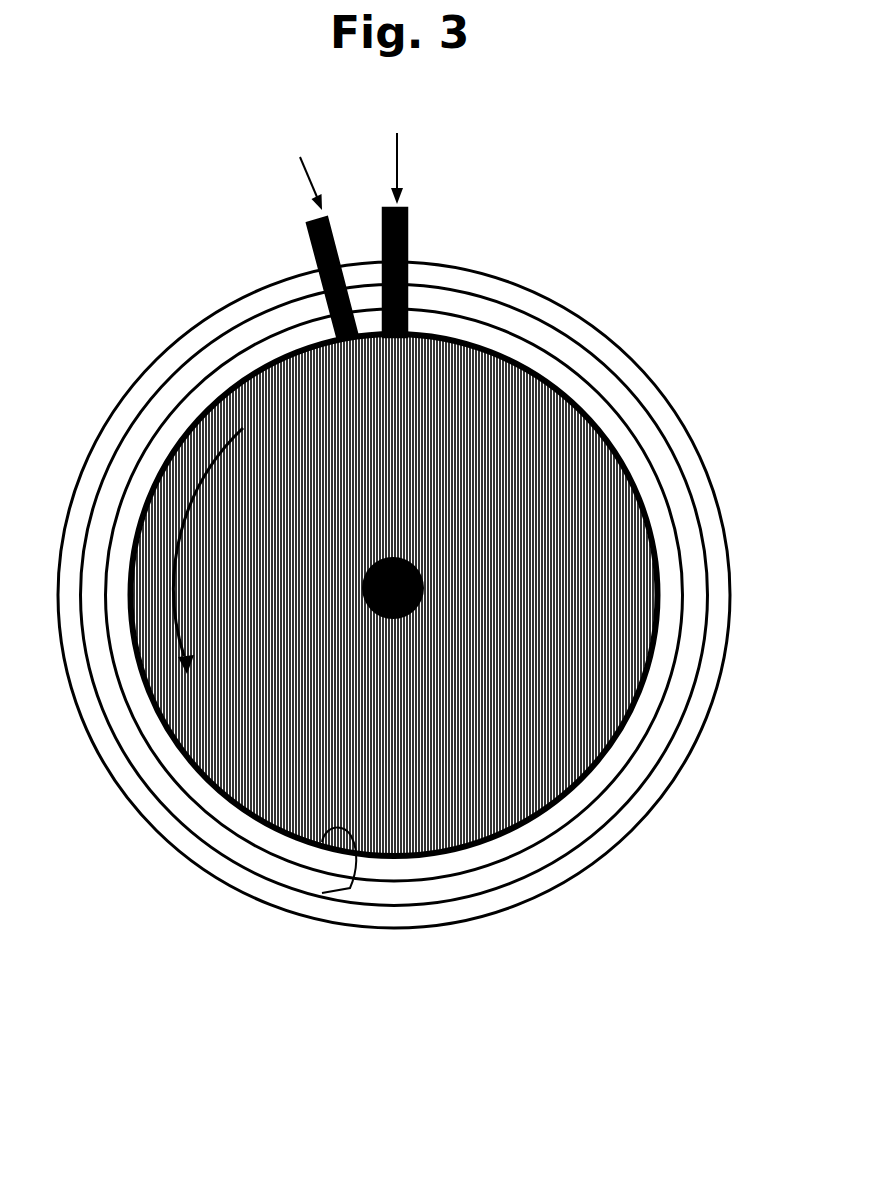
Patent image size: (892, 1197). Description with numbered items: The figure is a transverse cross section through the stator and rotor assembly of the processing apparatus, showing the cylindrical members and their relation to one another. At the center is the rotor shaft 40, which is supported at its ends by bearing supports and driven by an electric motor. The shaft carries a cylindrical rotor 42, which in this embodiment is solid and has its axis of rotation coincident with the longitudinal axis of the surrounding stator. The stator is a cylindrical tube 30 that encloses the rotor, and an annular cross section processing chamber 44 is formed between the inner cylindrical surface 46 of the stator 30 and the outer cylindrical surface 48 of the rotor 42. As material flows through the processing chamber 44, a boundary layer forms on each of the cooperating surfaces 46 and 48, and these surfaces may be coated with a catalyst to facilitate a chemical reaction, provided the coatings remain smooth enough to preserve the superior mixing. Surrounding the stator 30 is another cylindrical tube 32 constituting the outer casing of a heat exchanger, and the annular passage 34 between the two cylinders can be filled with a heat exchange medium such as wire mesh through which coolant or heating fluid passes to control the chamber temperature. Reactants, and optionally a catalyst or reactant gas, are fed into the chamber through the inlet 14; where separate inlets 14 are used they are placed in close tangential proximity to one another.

The inlet 14 is at (312, 247).
The cylindrical tube 30 is at (200, 792).
The cylindrical tube 32 is at (583, 336).
The annular passage 34 is at (678, 678).
The rotor shaft 40 is at (416, 607).
The cylindrical rotor 42 is at (482, 753).
The processing chamber 44 is at (490, 350).
The inner cylindrical surface 46 is at (450, 853).
The outer cylindrical surface 48 is at (322, 893).